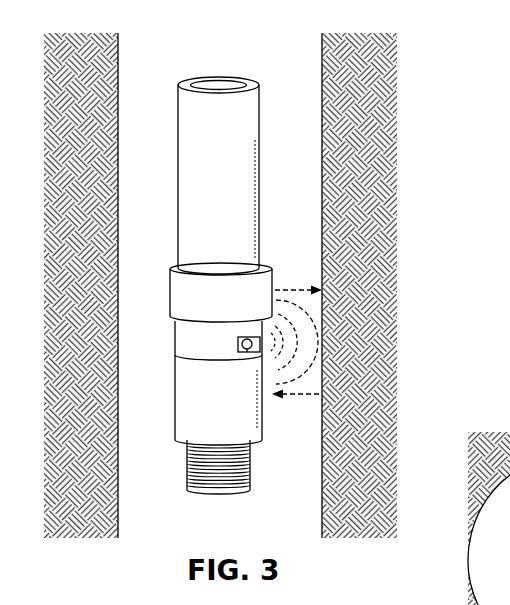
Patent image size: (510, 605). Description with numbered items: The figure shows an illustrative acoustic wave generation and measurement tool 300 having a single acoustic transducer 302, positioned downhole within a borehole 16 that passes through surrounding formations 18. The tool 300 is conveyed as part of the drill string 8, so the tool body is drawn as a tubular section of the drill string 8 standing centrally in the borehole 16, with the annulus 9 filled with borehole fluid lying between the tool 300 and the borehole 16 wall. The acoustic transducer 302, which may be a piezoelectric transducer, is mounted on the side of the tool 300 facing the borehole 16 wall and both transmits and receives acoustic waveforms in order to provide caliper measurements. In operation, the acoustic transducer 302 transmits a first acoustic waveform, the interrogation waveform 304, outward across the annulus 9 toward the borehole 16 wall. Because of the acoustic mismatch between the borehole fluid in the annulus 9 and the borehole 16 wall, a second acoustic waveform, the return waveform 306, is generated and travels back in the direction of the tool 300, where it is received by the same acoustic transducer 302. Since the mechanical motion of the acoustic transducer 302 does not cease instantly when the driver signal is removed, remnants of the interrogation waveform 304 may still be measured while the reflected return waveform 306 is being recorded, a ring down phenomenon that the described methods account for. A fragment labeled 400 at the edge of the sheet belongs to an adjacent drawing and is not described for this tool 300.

The drill string 8 is at (178, 113).
The annulus 9 is at (300, 163).
The borehole 16 is at (322, 92).
The formations 18 is at (385, 185).
The acoustic wave generation and measurement tool 300 is at (124, 23).
The acoustic transducer 302 is at (245, 354).
The interrogation waveform 304 is at (285, 289).
The return waveform 306 is at (304, 395).
The adjacent figure assembly 400 is at (489, 500).